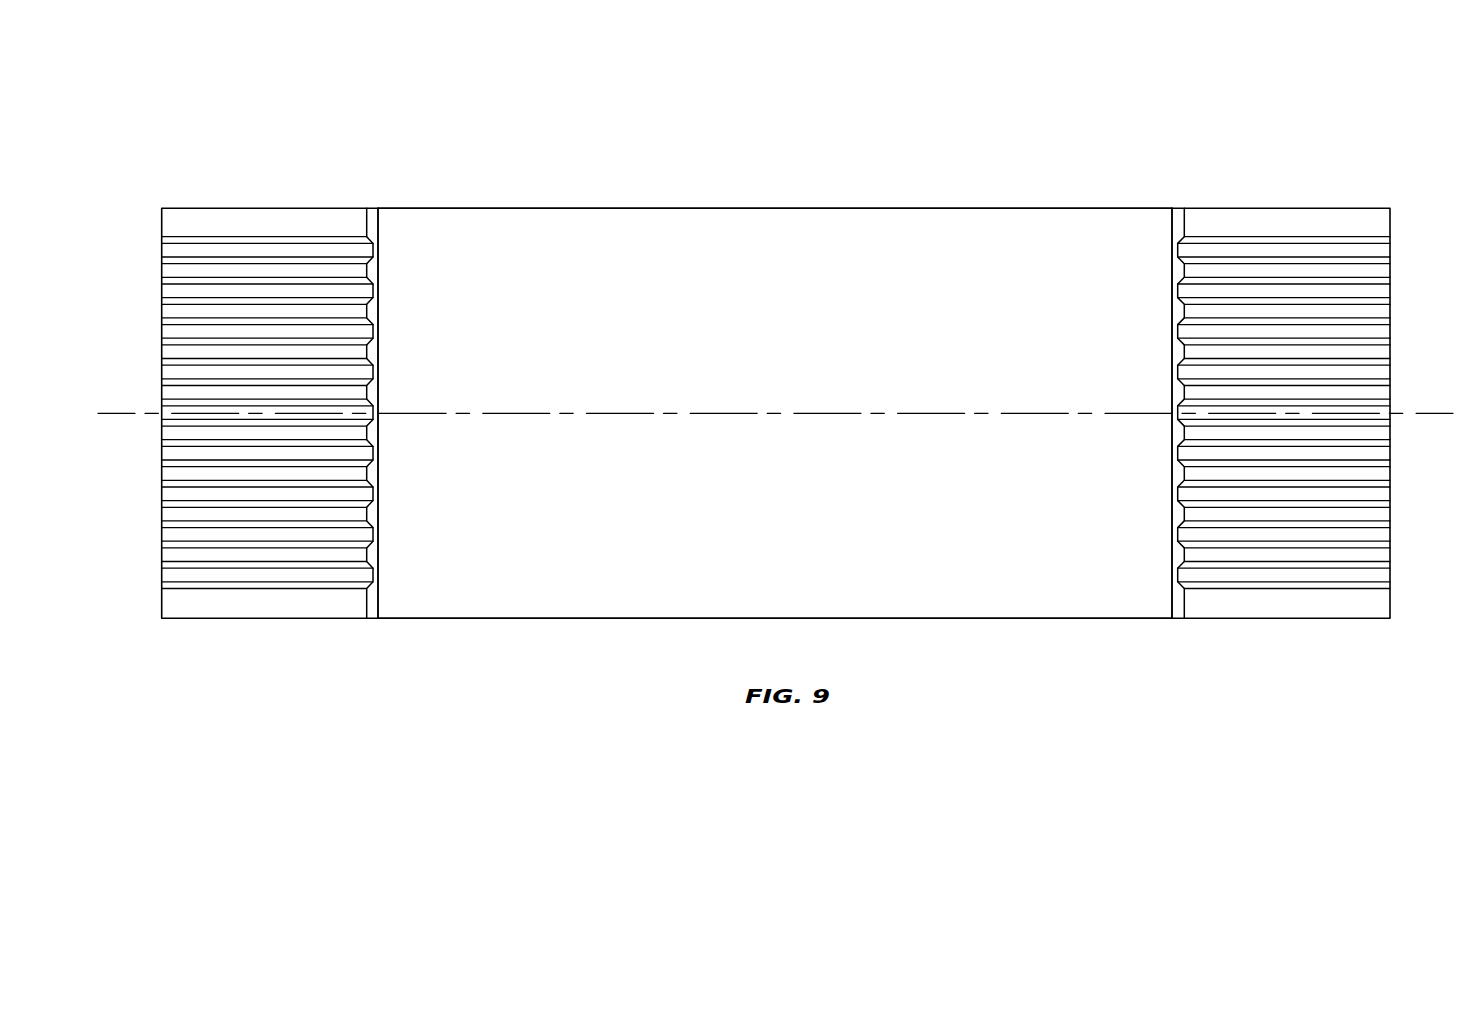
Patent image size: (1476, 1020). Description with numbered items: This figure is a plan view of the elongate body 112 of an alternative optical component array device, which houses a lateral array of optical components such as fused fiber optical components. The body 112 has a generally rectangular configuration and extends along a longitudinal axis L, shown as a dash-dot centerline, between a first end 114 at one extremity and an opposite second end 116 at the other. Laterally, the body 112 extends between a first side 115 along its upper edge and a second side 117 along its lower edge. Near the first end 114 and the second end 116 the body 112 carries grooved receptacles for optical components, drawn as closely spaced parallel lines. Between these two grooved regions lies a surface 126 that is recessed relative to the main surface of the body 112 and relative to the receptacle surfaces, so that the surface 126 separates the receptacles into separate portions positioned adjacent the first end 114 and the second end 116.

The elongate body 112 is at (1393, 90).
The first end 114 is at (162, 220).
The first side 115 is at (882, 208).
The second end 116 is at (1390, 219).
The second side 117 is at (882, 619).
The surface 126 is at (682, 553).
The longitudinal axis L is at (150, 412).